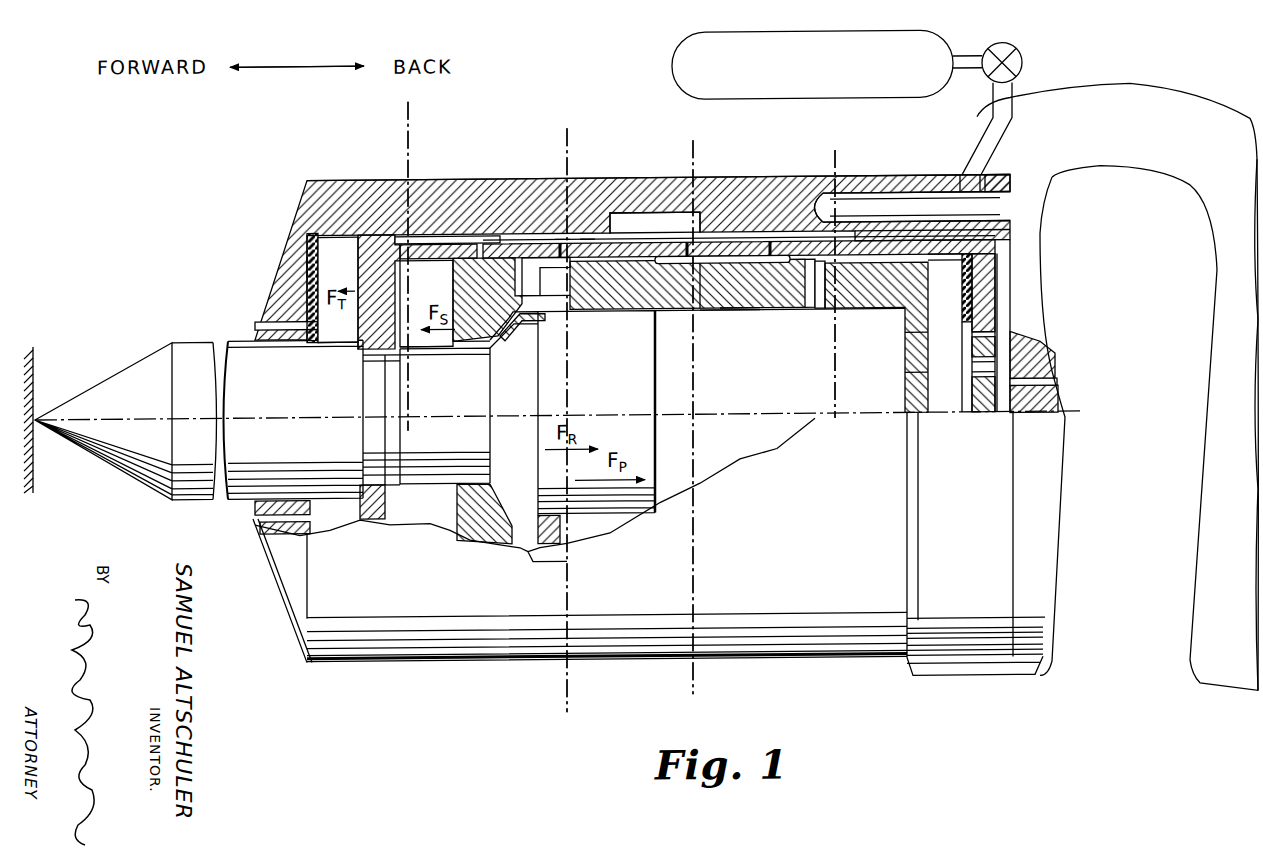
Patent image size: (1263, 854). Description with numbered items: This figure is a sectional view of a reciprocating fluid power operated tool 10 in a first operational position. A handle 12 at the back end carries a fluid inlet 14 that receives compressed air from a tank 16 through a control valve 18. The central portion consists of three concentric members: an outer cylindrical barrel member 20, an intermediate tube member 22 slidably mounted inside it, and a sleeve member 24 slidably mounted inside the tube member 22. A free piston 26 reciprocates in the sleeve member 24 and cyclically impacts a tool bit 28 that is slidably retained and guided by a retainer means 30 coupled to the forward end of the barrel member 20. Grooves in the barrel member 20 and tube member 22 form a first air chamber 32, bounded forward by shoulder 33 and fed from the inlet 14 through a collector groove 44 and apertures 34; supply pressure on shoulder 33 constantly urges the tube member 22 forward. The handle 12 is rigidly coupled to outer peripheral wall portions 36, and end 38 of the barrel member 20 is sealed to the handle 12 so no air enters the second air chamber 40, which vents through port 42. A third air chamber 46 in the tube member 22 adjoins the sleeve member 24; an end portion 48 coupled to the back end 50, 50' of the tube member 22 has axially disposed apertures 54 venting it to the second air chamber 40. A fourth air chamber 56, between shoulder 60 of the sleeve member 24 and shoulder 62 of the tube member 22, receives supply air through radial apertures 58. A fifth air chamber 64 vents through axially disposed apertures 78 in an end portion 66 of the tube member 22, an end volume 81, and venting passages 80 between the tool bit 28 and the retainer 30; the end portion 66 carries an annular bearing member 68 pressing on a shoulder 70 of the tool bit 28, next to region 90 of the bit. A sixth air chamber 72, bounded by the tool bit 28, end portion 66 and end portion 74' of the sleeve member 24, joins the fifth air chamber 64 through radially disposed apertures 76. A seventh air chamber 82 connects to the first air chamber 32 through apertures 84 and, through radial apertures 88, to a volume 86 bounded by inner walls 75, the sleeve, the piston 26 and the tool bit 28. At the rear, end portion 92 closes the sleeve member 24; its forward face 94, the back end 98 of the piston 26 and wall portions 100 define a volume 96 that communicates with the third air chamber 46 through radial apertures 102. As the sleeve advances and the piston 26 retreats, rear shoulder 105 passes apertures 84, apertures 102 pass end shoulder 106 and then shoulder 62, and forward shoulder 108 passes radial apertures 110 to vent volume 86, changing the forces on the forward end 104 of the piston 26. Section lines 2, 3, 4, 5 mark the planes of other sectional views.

The reciprocating fluid power operated tool 10 is at (312, 174).
The handle 12 is at (950, 150).
The fluid inlet 14 is at (1005, 128).
The tank 16 is at (935, 40).
The control valve 18 is at (1015, 58).
The outer cylindrical barrel member 20 is at (380, 185).
The intermediate tube member 22 is at (535, 250).
The sleeve member 24 is at (728, 318).
The free piston 26 is at (596, 412).
The tool bit 28 is at (295, 419).
The retainer means 30 is at (275, 253).
The first air chamber 32 is at (655, 221).
The shoulder of tube member 33 is at (560, 250).
The apertures 34 is at (913, 206).
The outer peripheral wall portions 36 is at (905, 183).
The end of barrel member 38 is at (1012, 238).
The second air chamber 40 is at (1002, 335).
The port 42 is at (1057, 390).
The collector groove 44 is at (990, 192).
The third air chamber 46 is at (915, 270).
The end portion 48 is at (1000, 293).
The back end of tube member 50 is at (955, 289).
The back end of tube member 50' is at (269, 266).
The axially disposed apertures 54 is at (975, 394).
The fourth air chamber 56 is at (730, 284).
The radially disposed interconnecting apertures 58 is at (700, 262).
The shoulder of sleeve member 60 is at (687, 284).
The shoulder of tube member 62 is at (795, 283).
The fifth air chamber 64 is at (430, 242).
The end portion of tube member 66 is at (345, 240).
The annular bearing member 68 is at (357, 352).
The shoulder of tool bit 70 is at (378, 352).
The sixth air chamber 72 is at (426, 303).
The end portion of sleeve member 74' is at (426, 360).
The inner walls of end portion 75 is at (470, 352).
The radially disposed apertures 76 is at (400, 250).
The axially disposed apertures 78 is at (340, 346).
The venting passages 80 is at (262, 330).
The end volume 81 is at (332, 287).
The seventh air chamber 82 is at (552, 305).
The radially disposed apertures 84 is at (585, 253).
The volume 86 is at (445, 416).
The radial apertures 88 is at (538, 325).
The spindle neck 90 is at (385, 380).
The end portion 92 is at (905, 394).
The forward face of end portion 94 is at (905, 357).
The volume 96 is at (716, 434).
The back end of piston 98 is at (656, 400).
The wall portions of sleeve 100 is at (735, 316).
The radial apertures 102 is at (825, 315).
The forward end of piston 104 is at (520, 414).
The rear shoulder of seventh air chamber 105 is at (565, 272).
The end shoulder of third air chamber 106 is at (876, 337).
The forward shoulder of seventh air chamber 108 is at (487, 300).
The radial apertures 110 is at (527, 246).
The section line 2— 2 is at (833, 157).
The section line 3- 3 is at (691, 146).
The section line 4— 4 is at (408, 105).
The section line 5- 5 is at (565, 133).